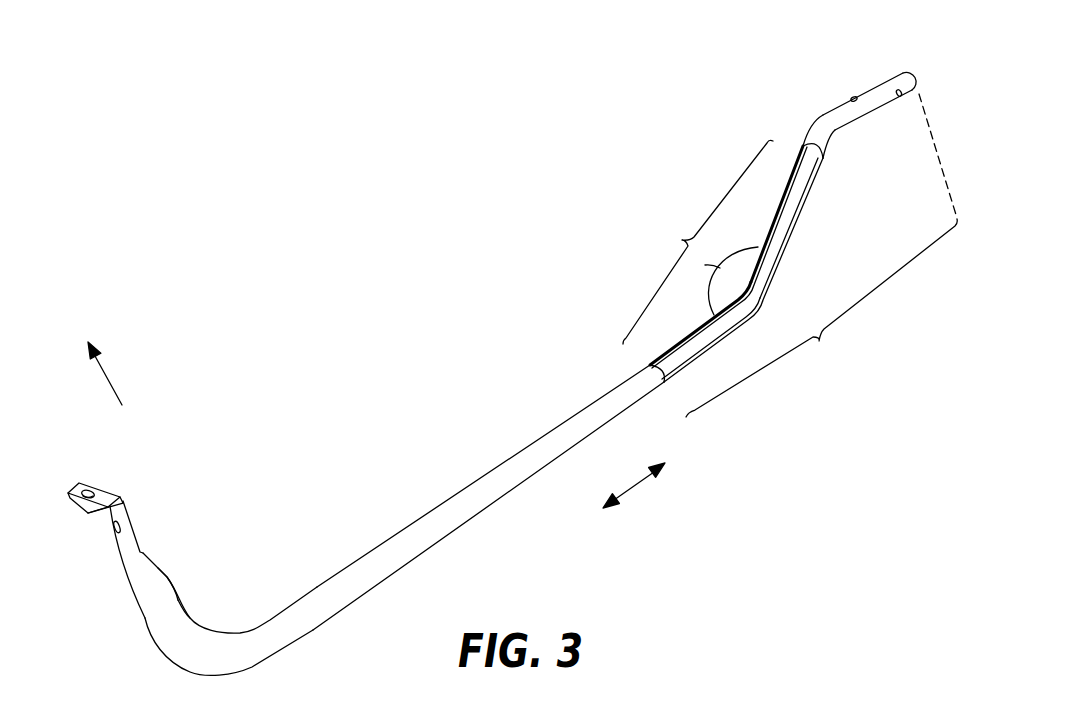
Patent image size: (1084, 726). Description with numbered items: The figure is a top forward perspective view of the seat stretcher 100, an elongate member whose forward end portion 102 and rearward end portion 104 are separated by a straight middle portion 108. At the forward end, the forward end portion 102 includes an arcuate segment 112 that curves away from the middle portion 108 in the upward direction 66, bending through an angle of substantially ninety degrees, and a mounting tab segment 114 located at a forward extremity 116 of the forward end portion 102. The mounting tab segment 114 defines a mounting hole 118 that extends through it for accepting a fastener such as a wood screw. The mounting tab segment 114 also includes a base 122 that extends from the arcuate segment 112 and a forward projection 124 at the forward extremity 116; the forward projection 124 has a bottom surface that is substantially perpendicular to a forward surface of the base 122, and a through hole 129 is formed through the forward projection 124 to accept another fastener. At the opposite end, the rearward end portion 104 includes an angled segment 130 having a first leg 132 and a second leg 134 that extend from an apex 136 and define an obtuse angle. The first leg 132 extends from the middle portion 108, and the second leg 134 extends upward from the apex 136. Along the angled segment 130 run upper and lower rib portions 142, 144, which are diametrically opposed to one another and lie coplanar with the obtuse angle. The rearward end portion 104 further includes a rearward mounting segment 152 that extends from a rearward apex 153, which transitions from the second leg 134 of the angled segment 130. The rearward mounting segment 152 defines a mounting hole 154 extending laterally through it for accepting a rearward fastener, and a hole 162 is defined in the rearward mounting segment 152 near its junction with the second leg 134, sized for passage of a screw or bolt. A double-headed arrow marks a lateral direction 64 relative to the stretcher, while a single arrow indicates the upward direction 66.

The seat stretcher 100 is at (286, 301).
The forward end portion 102 is at (160, 647).
The rearward end portion 104 is at (821, 255).
The middle portion 108 is at (447, 534).
The arcuate segment 112 is at (183, 607).
The mounting tab segment 114 is at (141, 548).
The forward extremity 116 is at (78, 507).
The mounting hole 118 is at (113, 533).
The base 122 is at (168, 577).
The forward projection 124 is at (77, 482).
The through hole 129 is at (97, 491).
The angled segment 130 is at (698, 242).
The first leg 132 is at (705, 323).
The second leg 134 is at (786, 246).
The apex 136 is at (765, 305).
The upper rib portion 142 is at (780, 205).
The lower rib portion 144 is at (691, 362).
The rearward mounting segment 152 is at (878, 85).
The rearward apex 153 is at (822, 132).
The mounting hole 154 is at (900, 97).
The hole 162 is at (852, 97).
The lateral direction 64 is at (641, 481).
The upward direction 66 is at (112, 386).